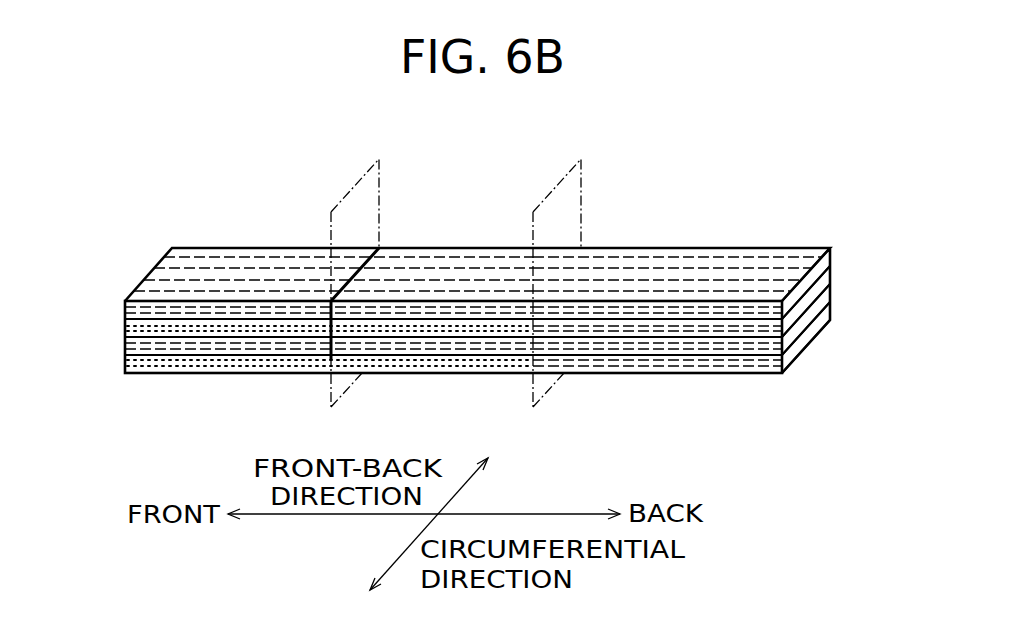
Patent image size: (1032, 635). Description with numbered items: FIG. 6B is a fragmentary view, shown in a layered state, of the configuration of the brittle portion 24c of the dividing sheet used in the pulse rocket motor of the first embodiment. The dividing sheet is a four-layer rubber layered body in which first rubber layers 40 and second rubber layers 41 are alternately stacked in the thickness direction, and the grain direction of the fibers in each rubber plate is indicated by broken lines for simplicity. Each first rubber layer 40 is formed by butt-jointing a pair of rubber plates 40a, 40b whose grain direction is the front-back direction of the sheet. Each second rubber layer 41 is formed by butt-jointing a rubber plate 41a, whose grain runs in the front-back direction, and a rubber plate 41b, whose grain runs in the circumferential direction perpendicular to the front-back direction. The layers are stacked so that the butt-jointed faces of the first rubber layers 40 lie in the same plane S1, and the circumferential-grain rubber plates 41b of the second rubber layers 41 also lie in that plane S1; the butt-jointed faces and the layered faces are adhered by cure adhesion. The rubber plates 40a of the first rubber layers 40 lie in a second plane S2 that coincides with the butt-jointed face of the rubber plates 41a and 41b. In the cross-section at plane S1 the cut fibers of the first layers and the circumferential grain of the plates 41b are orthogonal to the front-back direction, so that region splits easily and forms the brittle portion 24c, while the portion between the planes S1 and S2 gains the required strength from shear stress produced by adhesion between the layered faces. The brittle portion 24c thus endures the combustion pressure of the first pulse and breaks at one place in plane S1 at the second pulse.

The first rubber layer 40 is at (828, 255).
The second rubber layer 41 is at (830, 277).
The rubber plate 40a is at (758, 262).
The rubber plate 41a is at (677, 327).
The rubber plate 40b is at (167, 273).
The rubber plate 41b is at (135, 325).
The brittle portion 24c is at (380, 248).
The plane S1 is at (348, 193).
The plane S2 is at (583, 203).